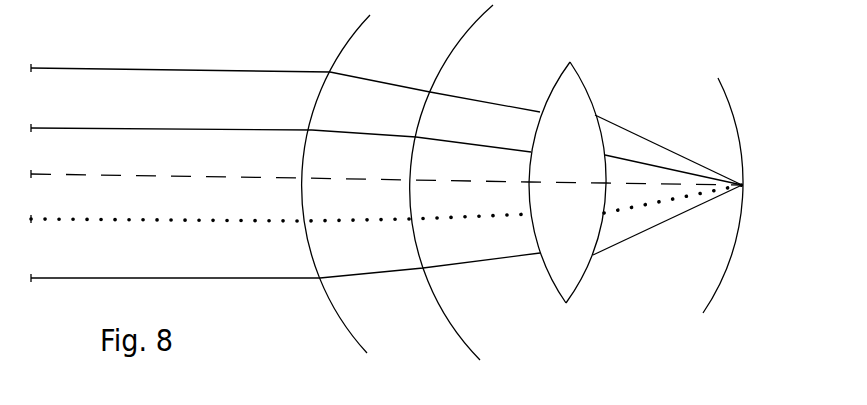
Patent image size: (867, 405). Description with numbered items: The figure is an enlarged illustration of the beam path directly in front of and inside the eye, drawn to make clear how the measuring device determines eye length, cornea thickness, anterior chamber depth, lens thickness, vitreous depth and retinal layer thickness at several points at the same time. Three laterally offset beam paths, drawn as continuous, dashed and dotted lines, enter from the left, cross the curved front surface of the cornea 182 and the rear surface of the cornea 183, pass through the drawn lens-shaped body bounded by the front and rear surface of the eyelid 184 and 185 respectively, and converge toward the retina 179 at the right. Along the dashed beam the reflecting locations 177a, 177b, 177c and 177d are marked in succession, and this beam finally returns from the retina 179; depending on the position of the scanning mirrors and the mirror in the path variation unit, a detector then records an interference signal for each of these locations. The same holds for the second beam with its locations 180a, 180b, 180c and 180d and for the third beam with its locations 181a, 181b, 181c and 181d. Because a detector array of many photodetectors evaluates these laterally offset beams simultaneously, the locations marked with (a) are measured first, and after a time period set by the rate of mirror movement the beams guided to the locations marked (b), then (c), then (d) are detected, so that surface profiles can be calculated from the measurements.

The location 177a is at (312, 129).
The location 177b is at (416, 136).
The location 177c is at (532, 151).
The location 177d is at (607, 150).
The location 180a is at (303, 174).
The location 180b is at (412, 176).
The location 180c is at (528, 181).
The location 180d is at (606, 184).
The location 181a is at (305, 220).
The location 181b is at (413, 218).
The location 181c is at (531, 214).
The location 181d is at (605, 215).
The front surface of the cornea 182 is at (355, 337).
The rear surface of the cornea 183 is at (450, 287).
The front surface of the eyelid 184 is at (552, 284).
The rear surface of the eyelid 185 is at (590, 282).
The retina 179 is at (740, 207).